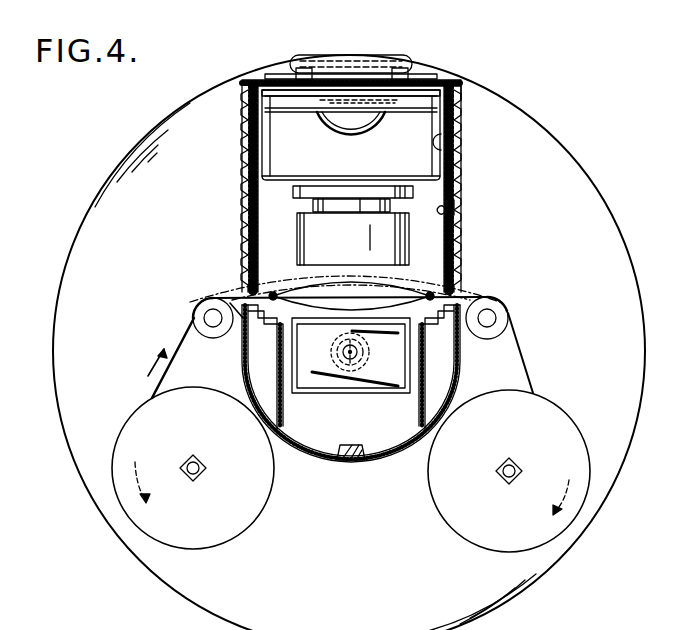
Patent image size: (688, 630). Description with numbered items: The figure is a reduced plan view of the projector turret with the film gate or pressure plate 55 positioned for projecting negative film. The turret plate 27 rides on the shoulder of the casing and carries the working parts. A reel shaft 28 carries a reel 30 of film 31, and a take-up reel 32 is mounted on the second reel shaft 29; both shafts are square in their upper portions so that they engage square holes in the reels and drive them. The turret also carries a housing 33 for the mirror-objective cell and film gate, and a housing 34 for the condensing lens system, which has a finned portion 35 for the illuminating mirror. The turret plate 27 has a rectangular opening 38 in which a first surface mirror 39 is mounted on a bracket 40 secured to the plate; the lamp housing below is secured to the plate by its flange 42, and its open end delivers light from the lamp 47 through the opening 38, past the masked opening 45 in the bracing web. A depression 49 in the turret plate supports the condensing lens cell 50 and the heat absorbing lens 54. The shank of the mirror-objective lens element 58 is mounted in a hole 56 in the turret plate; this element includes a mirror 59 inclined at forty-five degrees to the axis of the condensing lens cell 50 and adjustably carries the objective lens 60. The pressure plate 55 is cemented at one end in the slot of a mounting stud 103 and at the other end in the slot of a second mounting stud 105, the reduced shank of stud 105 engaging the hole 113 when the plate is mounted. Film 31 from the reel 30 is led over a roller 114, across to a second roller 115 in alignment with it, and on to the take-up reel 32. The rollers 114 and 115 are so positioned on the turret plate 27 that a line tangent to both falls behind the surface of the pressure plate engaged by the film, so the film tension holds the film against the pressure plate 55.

The turret plate 27 is at (584, 195).
The reel shaft 28 is at (522, 470).
The reel shaft 29 is at (200, 477).
The reel 30 is at (130, 440).
The film 31 is at (245, 297).
The take-up reel 32 is at (567, 449).
The housing 33 is at (370, 463).
The housing 34 is at (458, 208).
The finned portion 35 is at (459, 100).
The rectangular opening 38 is at (462, 158).
The first surface mirror 39 is at (302, 98).
The bracket 40 is at (405, 95).
The flange 42 is at (351, 383).
The masked opening 45 is at (306, 178).
The lamp 47 is at (357, 130).
The depression 49 is at (313, 205).
The condensing lens cell 50 is at (404, 235).
The heat absorbing lens 54 is at (412, 195).
The film gate or pressure plate 55 is at (370, 300).
The hole 56 is at (363, 378).
The mirror-objective lens element 58 is at (416, 384).
The mirror 59 is at (382, 380).
The objective lens 60 is at (342, 360).
The mounting stud 103 is at (273, 293).
The mounting stud 105 is at (430, 293).
The hole 113 is at (458, 298).
The roller 114 is at (218, 336).
The roller 115 is at (490, 337).